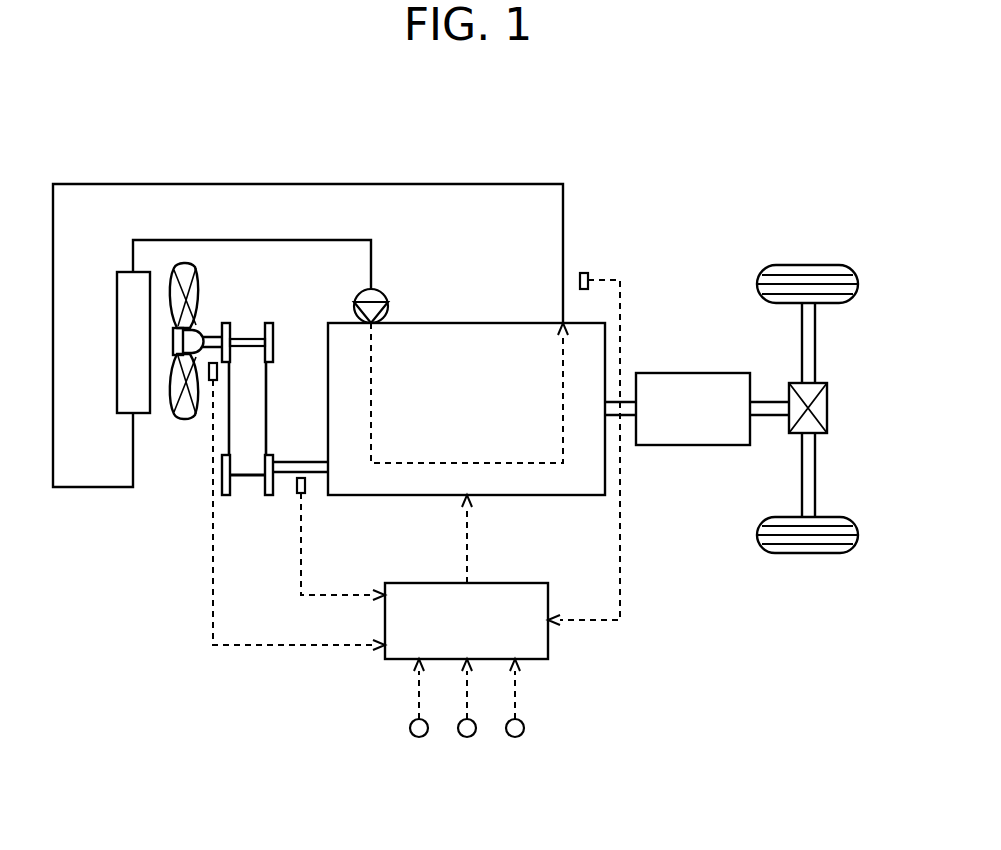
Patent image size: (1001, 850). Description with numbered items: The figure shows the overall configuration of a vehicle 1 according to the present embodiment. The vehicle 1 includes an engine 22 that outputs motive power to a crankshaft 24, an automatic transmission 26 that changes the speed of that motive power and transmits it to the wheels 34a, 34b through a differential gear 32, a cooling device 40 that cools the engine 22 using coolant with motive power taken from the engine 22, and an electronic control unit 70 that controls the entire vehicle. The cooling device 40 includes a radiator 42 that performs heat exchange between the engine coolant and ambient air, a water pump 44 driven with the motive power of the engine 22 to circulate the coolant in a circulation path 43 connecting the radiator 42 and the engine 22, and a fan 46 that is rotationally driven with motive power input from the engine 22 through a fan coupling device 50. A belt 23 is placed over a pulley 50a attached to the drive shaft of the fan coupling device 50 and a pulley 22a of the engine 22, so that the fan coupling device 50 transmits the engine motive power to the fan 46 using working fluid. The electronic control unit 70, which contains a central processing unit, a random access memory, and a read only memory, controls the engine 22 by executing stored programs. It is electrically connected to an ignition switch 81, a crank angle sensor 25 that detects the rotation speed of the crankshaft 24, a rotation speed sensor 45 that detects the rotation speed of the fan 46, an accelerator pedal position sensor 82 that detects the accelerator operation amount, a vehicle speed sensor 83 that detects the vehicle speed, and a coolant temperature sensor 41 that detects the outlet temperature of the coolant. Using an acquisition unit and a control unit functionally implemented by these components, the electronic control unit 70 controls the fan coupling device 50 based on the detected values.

The vehicle 1 is at (626, 191).
The engine 22 is at (453, 323).
The pulley of the engine 22a is at (269, 456).
The belt 23 is at (248, 457).
The crankshaft 24 is at (304, 462).
The crank angle sensor 25 is at (297, 493).
The automatic transmission 26 is at (685, 373).
The differential gear 32 is at (828, 407).
The wheel 34a is at (829, 553).
The wheel 34b is at (832, 265).
The cooling device 40 is at (330, 156).
The coolant temperature sensor 41 is at (585, 273).
The radiator 42 is at (115, 272).
The circulation path 43 is at (463, 184).
The water pump 44 is at (386, 290).
The rotation speed sensor 45 is at (212, 382).
The fan 46 is at (198, 270).
The fan coupling device 50 is at (253, 287).
The pulley 50a is at (231, 323).
The electronic control unit 70 is at (510, 583).
The ignition switch 81 is at (515, 738).
The accelerator pedal position sensor 82 is at (467, 738).
The vehicle speed sensor 83 is at (419, 738).